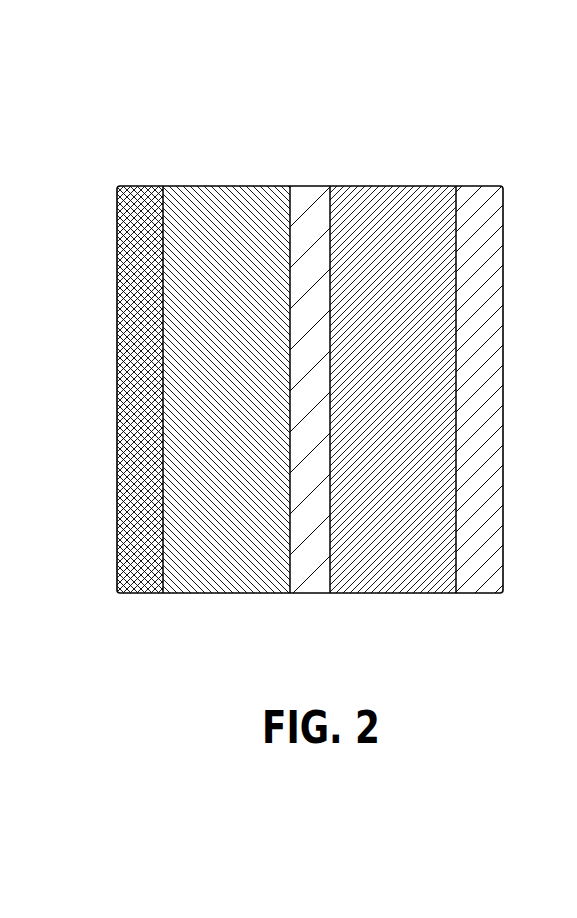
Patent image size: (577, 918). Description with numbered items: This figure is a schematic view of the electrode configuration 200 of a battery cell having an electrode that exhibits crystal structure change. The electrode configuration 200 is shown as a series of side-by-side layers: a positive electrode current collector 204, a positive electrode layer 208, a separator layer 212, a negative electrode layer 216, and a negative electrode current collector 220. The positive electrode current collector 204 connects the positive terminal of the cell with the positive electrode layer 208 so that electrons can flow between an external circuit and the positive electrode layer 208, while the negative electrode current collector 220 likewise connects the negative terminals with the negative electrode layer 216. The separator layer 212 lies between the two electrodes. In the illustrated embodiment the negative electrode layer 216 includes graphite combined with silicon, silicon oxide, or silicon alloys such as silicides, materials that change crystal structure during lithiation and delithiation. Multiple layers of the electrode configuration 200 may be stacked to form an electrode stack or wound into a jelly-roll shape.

The electrode configuration 200 is at (288, 334).
The positive electrode current collector 204 is at (135, 190).
The positive electrode layer 208 is at (230, 190).
The separator layer 212 is at (313, 192).
The negative electrode layer 216 is at (407, 193).
The negative electrode current collector 220 is at (493, 190).